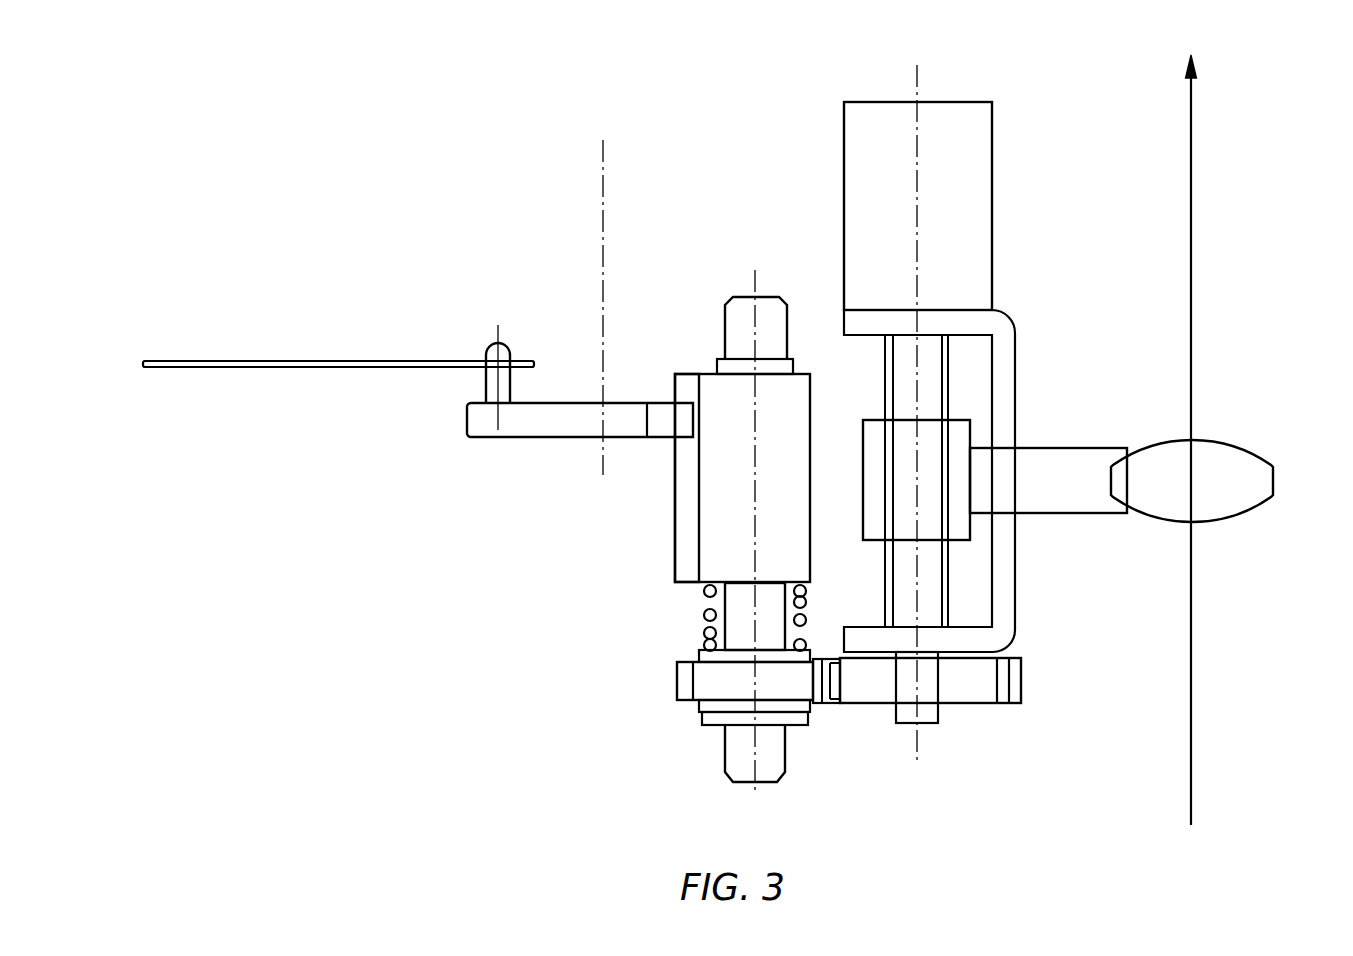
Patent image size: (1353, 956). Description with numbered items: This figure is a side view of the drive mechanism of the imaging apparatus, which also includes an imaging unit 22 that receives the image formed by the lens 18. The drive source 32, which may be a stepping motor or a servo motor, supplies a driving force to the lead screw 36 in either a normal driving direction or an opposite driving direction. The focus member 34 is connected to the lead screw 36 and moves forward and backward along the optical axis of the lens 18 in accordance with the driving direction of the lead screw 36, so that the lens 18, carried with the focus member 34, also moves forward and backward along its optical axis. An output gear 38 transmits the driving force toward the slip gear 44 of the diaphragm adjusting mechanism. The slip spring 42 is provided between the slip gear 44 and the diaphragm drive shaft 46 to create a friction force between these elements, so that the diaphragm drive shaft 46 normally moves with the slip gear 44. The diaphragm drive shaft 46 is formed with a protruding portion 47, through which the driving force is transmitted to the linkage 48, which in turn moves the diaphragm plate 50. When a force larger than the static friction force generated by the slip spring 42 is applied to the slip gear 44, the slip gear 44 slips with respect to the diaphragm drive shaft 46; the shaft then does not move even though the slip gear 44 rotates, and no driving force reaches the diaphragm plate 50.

The lens 18 is at (1233, 465).
The imaging unit 22 is at (1190, 425).
The drive source 32 is at (977, 157).
The focus member 34 is at (1073, 508).
The lead screw 36 is at (932, 382).
The output gear 38 is at (969, 690).
The slip spring 42 is at (700, 615).
The slip gear 44 is at (698, 690).
The diaphragm drive shaft 46 is at (713, 390).
The protruding portion 47 is at (683, 503).
The linkage 48 is at (547, 428).
The diaphragm plate 50 is at (320, 367).